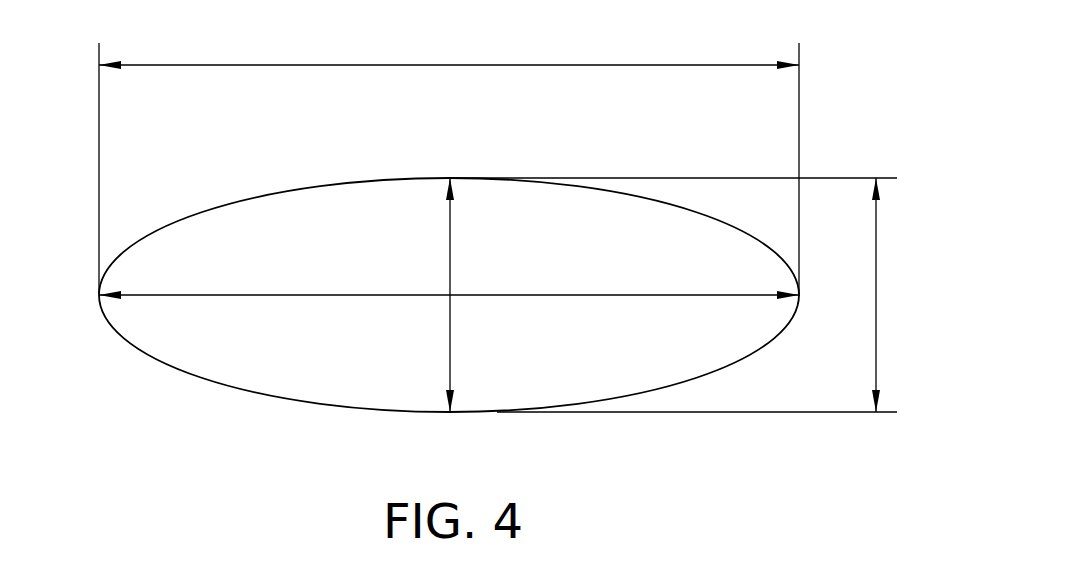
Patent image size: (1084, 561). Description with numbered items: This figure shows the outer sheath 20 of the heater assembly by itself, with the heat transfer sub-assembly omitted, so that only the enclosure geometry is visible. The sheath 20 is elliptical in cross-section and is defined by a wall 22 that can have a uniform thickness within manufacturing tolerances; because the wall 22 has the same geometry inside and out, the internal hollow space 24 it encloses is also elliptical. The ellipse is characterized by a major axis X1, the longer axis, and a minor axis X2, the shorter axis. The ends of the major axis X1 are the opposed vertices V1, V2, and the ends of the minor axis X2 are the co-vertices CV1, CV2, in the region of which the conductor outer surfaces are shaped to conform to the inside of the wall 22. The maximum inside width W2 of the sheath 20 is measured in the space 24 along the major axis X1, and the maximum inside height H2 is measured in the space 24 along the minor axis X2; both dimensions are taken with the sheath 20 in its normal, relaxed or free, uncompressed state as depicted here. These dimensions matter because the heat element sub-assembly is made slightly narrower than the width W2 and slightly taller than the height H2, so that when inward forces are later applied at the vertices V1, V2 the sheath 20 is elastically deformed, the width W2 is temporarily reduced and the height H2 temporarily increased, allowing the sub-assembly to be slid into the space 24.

The sheath 20 is at (240, 185).
The wall 22 is at (590, 188).
The internal hollow space 24 is at (214, 352).
The maximum inside width W2 is at (450, 65).
The maximum inside height H2 is at (876, 283).
The major axis X1 is at (595, 296).
The minor axis X2 is at (450, 232).
The major axis vertex V1 is at (92, 294).
The major axis vertex V2 is at (805, 296).
The co-vertex CV1 is at (450, 177).
The co-vertex CV2 is at (450, 413).